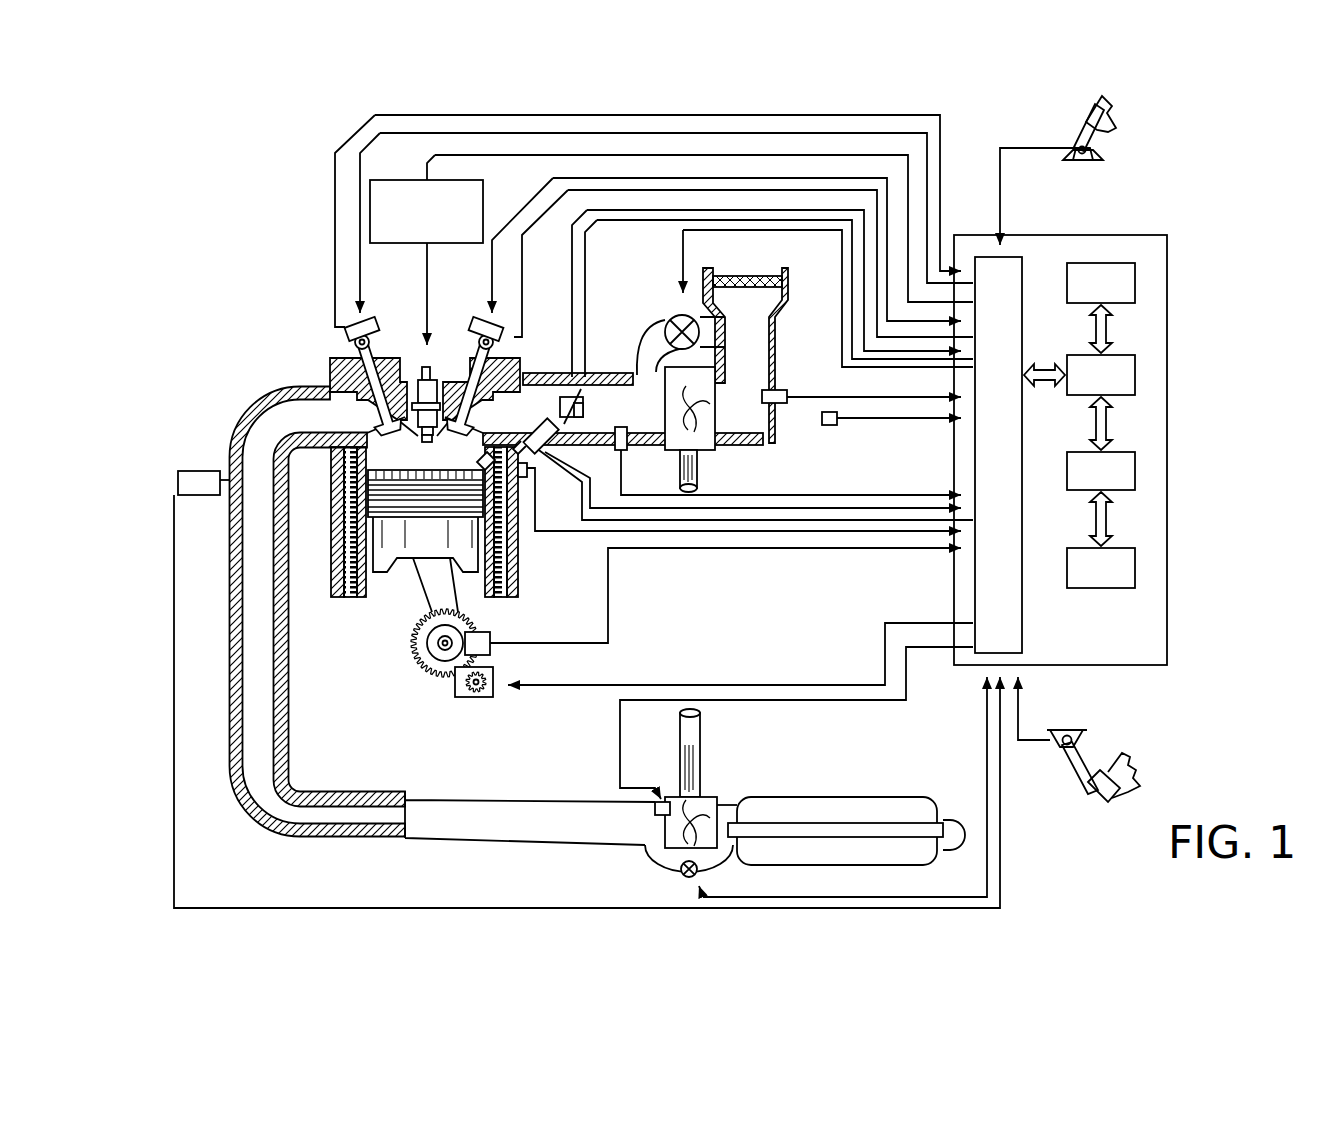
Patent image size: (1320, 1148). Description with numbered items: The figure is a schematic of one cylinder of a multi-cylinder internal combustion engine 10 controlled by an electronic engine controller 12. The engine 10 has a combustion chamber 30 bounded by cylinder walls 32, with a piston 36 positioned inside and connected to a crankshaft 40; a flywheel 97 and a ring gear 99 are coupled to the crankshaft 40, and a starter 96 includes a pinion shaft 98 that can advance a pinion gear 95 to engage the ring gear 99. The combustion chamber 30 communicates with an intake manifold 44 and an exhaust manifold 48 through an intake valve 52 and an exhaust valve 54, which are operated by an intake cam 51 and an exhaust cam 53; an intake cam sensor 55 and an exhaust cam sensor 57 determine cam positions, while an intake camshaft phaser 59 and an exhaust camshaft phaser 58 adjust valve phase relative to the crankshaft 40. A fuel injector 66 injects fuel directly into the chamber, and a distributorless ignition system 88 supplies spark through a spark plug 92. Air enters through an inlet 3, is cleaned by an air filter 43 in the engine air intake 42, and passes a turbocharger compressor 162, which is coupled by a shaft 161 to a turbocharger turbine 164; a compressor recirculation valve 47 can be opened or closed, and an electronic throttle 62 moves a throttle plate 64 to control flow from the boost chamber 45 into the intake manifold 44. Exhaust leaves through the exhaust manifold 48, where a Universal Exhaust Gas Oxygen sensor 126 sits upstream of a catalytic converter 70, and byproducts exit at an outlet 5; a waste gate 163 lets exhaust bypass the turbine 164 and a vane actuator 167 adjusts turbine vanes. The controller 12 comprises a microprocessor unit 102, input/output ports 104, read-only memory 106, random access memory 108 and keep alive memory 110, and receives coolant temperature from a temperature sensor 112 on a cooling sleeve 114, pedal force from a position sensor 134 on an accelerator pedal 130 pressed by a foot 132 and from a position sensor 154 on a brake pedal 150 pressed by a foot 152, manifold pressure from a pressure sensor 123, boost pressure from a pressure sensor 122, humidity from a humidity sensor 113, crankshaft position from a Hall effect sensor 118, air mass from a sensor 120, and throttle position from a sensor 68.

The inlet 3 is at (758, 272).
The outlet 5 is at (958, 808).
The internal combustion engine 10 is at (270, 310).
The electronic engine controller 12 is at (1160, 235).
The combustion chamber 30 is at (344, 548).
The cylinder walls 32 is at (372, 588).
The piston 36 is at (408, 550).
The crankshaft 40 is at (433, 660).
The engine air intake 42 is at (660, 276).
The air filter 43 is at (747, 290).
The intake manifold 44 is at (546, 411).
The boost chamber 45 is at (642, 419).
The compressor recirculation valve 47 is at (674, 317).
The exhaust manifold 48 is at (321, 424).
The intake cam 51 is at (478, 320).
The intake valve 52 is at (463, 425).
The exhaust cam 53 is at (374, 320).
The exhaust valve 54 is at (378, 425).
The intake cam sensor 55 is at (497, 330).
The exhaust cam sensor 57 is at (352, 338).
The exhaust camshaft phaser 58 is at (374, 342).
The intake camshaft phaser 59 is at (479, 343).
The electronic throttle 62 is at (584, 405).
The throttle plate 64 is at (583, 418).
The fuel injector 66 is at (533, 450).
The throttle position sensor 68 is at (575, 392).
The catalytic converter 70 is at (777, 797).
The distributorless ignition system 88 is at (388, 180).
The spark plug 92 is at (432, 362).
The pinion gear 95 is at (478, 698).
The starter 96 is at (490, 690).
The flywheel 97 is at (418, 642).
The pinion shaft 98 is at (470, 695).
The ring gear 99 is at (440, 678).
The microprocessor unit 102 is at (1137, 370).
The input/output ports 104 is at (1023, 262).
The read-only memory 106 is at (1137, 278).
The random access memory 108 is at (1137, 468).
The keep alive memory 110 is at (1137, 563).
The temperature sensor 112 is at (527, 478).
The humidity sensor 113 is at (830, 426).
The cooling sleeve 114 is at (500, 553).
The Hall effect sensor 118 is at (490, 635).
The air mass sensor 120 is at (777, 390).
The pressure sensor 122 is at (624, 450).
The pressure sensor 123 is at (552, 447).
The Universal Exhaust Gas Oxygen sensor 126 is at (180, 472).
The accelerator pedal 130 is at (1063, 124).
The foot 132 is at (1112, 113).
The position sensor 134 is at (1095, 150).
The brake pedal 150 is at (1090, 788).
The foot 152 is at (1125, 760).
The position sensor 154 is at (1055, 736).
The shaft 161 is at (698, 470).
The turbocharger compressor 162 is at (716, 398).
The waste gate 163 is at (683, 876).
The turbocharger turbine 164 is at (668, 797).
The vane actuator 167 is at (655, 802).